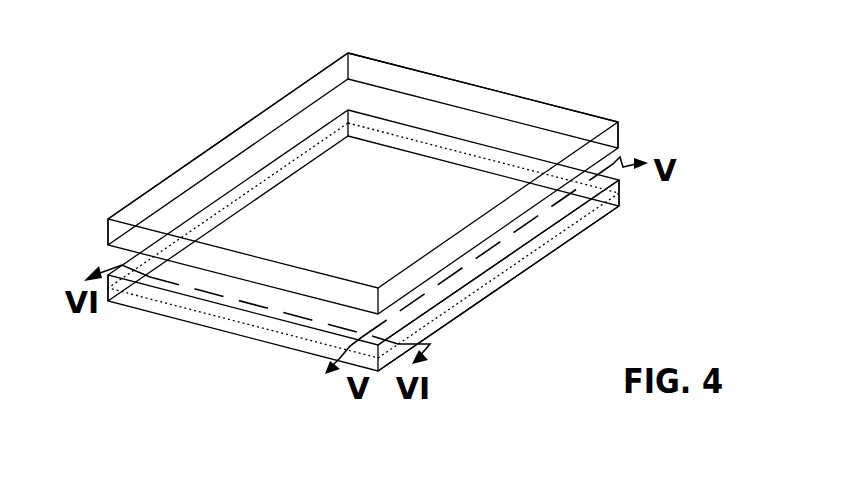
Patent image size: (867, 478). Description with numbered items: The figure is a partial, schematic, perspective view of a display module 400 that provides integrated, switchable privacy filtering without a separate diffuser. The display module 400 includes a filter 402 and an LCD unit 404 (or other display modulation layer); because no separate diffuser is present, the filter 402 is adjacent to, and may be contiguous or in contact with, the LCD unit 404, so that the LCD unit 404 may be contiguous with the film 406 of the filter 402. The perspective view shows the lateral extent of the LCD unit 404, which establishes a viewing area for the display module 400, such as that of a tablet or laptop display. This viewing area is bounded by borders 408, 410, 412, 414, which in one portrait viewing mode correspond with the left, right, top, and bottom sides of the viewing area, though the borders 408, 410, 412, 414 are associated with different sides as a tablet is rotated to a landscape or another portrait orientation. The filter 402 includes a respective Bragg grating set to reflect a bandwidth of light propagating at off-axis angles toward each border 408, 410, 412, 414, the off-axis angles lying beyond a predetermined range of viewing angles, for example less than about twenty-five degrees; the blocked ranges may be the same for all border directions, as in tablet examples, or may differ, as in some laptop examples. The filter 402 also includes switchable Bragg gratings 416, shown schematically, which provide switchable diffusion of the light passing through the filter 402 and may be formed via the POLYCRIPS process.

The display module 400 is at (351, 198).
The filter 402 is at (364, 242).
The LCD unit 404 is at (351, 177).
The film 406 is at (540, 260).
The border 408 is at (250, 121).
The border 410 is at (613, 157).
The border 412 is at (452, 79).
The border 414 is at (108, 253).
The switchable Bragg gratings 416 is at (490, 284).